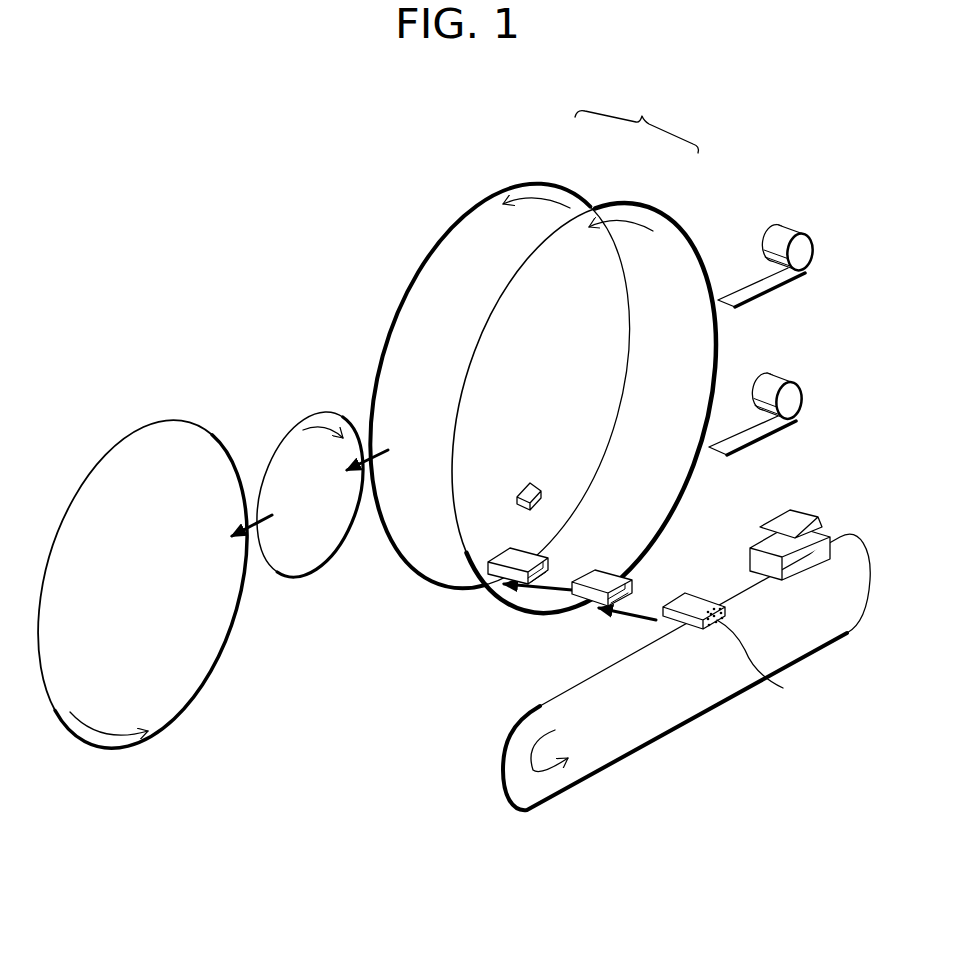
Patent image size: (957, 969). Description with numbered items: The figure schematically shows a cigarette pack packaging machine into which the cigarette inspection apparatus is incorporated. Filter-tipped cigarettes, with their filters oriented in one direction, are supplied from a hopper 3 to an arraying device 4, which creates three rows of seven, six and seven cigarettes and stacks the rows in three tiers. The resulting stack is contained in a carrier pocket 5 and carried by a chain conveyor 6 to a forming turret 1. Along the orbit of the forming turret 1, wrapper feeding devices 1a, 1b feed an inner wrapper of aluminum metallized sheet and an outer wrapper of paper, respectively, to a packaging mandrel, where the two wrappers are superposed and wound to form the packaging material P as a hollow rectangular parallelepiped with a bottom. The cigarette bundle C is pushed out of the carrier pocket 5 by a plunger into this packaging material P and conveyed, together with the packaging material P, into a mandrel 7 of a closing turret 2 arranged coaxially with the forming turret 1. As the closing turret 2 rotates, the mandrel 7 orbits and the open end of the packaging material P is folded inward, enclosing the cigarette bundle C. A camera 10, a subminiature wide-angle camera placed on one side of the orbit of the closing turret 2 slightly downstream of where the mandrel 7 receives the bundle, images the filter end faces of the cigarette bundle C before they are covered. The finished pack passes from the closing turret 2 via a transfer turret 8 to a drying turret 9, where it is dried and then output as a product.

The forming turret 1 is at (640, 203).
The wrapper feeding device 1a is at (780, 383).
The wrapper feeding device 1b is at (790, 233).
The closing turret 2 is at (557, 183).
The hopper 3 is at (787, 516).
The arraying device 4 is at (832, 538).
The carrier pocket 5 is at (694, 603).
The chain conveyor 6 is at (728, 704).
The mandrel 7 is at (509, 555).
The transfer turret 8 is at (287, 433).
The drying turret 9 is at (130, 437).
The camera 10 is at (529, 482).
The packaging material P is at (588, 592).
The cigarette bundle C is at (760, 662).